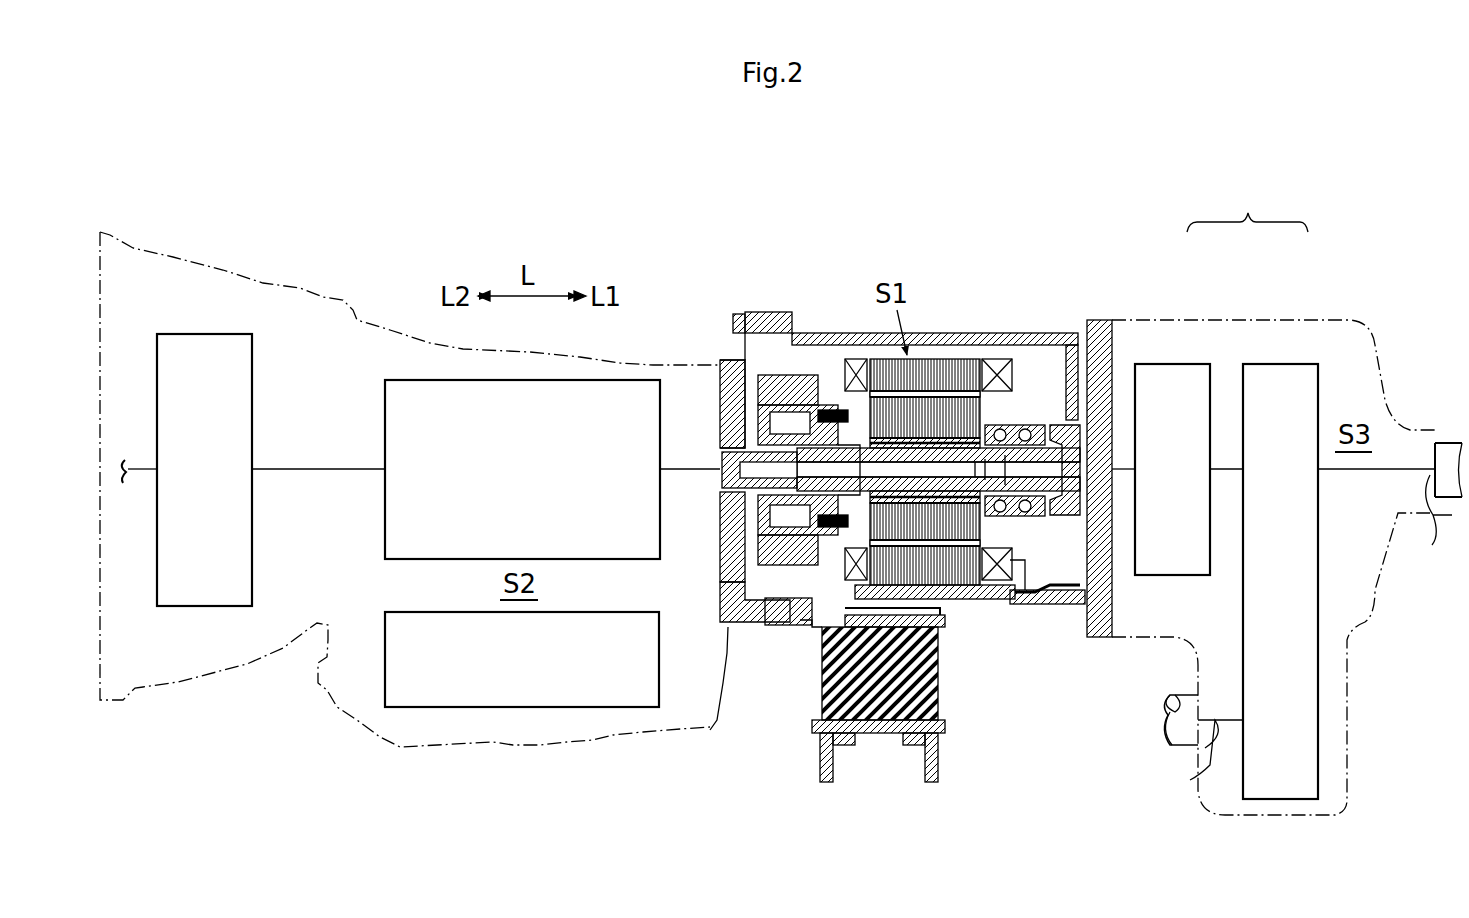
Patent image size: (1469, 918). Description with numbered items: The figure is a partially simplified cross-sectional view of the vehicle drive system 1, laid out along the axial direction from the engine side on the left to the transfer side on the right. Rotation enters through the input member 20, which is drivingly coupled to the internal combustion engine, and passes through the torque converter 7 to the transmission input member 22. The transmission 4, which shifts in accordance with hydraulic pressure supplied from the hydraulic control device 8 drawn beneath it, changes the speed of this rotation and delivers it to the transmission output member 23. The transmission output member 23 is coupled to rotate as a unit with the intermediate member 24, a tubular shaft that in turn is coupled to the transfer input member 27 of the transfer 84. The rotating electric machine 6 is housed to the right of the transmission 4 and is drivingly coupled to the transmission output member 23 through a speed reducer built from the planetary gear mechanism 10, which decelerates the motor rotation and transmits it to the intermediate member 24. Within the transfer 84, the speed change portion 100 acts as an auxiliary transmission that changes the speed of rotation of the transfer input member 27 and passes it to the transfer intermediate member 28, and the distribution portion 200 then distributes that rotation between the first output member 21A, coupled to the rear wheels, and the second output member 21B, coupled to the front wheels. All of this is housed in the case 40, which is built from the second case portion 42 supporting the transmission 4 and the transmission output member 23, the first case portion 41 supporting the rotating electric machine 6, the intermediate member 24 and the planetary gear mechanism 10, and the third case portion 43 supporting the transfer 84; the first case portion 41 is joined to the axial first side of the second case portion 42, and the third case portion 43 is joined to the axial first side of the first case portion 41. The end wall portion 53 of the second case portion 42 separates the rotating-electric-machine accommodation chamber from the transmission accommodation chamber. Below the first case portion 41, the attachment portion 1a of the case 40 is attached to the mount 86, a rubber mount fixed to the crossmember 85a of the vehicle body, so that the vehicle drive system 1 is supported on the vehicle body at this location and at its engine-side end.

The vehicle drive system 1 is at (1043, 200).
The attachment portion 1a is at (955, 620).
The transmission 4 is at (385, 398).
The rotating electric machine 6 is at (1002, 537).
The torque converter 7 is at (207, 334).
The hydraulic control device 8 is at (468, 707).
The planetary gear mechanism 10 is at (752, 362).
The input member 20 is at (133, 471).
The first output member 21A is at (1390, 513).
The second output member 21B is at (1215, 722).
The transmission input member 22 is at (316, 471).
The transmission output member 23 is at (700, 472).
The intermediate member 24 is at (950, 455).
The transfer input member 27 is at (1070, 500).
The transfer intermediate member 28 is at (1228, 472).
The case 40 is at (820, 333).
The first case portion 41 is at (870, 342).
The second case portion 42 is at (674, 360).
The third case portion 43 is at (1163, 318).
The end wall portion 53 is at (735, 397).
The transfer 84 is at (1247, 205).
The crossmember 85a is at (938, 760).
The mount 86 is at (820, 702).
The speed change portion 100 is at (1200, 364).
The distribution portion 200 is at (1262, 364).